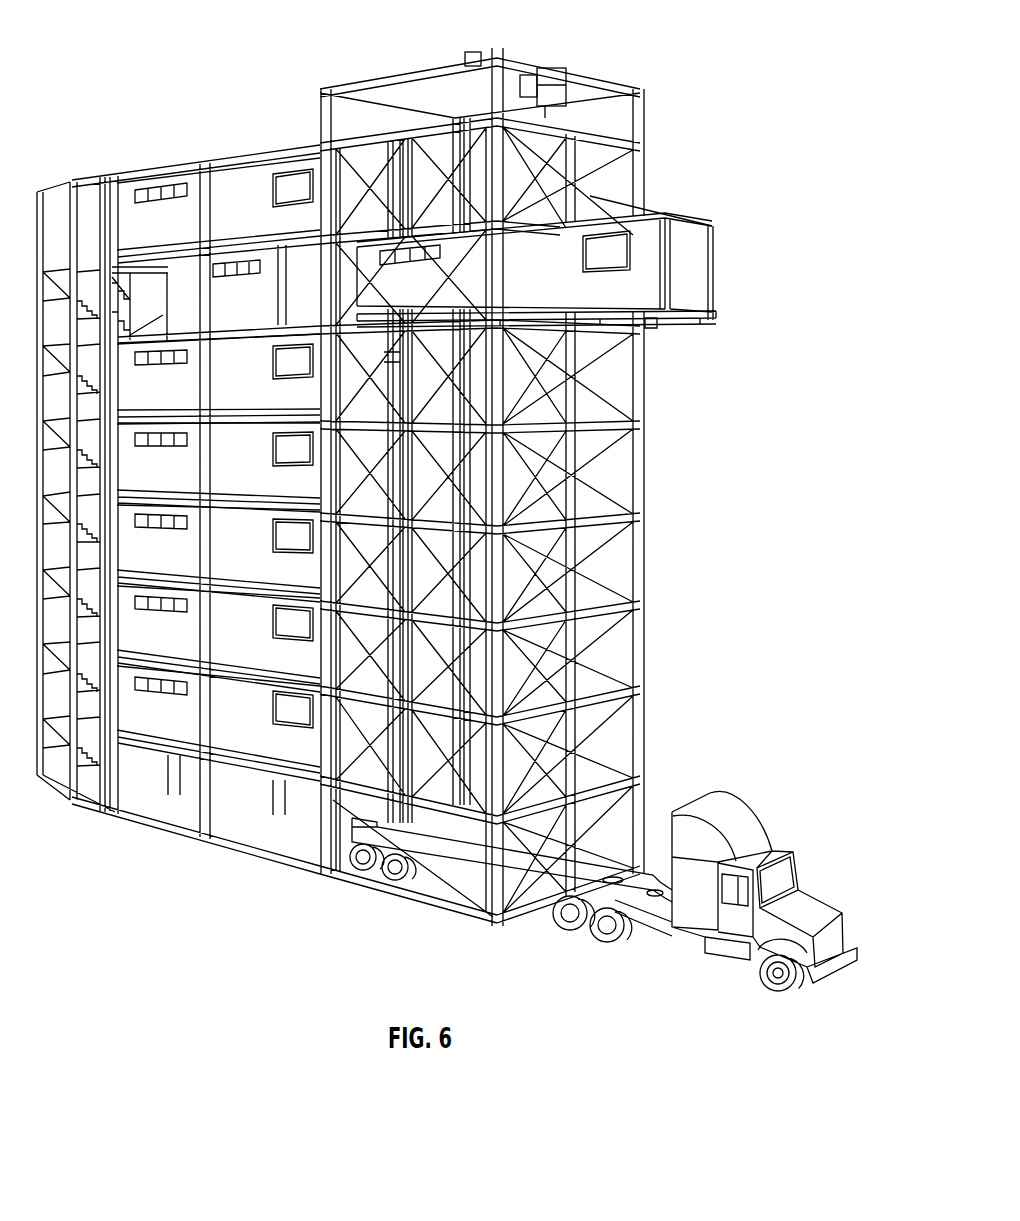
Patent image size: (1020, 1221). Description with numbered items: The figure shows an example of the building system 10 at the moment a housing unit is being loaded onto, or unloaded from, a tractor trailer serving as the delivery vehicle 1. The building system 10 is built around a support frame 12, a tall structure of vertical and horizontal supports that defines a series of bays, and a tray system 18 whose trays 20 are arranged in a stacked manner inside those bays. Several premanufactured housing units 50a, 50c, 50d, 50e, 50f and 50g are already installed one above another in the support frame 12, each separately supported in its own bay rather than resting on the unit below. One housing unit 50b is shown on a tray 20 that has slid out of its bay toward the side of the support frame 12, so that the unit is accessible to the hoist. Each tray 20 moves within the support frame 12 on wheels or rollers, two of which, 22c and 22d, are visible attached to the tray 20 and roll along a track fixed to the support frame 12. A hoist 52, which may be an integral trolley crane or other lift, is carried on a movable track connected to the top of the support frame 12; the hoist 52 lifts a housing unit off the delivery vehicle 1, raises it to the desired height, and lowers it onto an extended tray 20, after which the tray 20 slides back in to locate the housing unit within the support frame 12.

The delivery vehicle 1 is at (755, 803).
The building system 10 is at (674, 535).
The support frame 12 is at (643, 490).
The tray system 18 is at (718, 316).
The tray 20 is at (688, 312).
The wheel or roller 22c is at (652, 326).
The wheel or roller 22d is at (363, 358).
The housing unit 50a is at (177, 233).
The housing unit 50b is at (551, 298).
The housing unit 50c is at (177, 397).
The housing unit 50d is at (177, 479).
The housing unit 50e is at (177, 561).
The housing unit 50f is at (177, 643).
The housing unit 50g is at (177, 725).
The hoist 52 is at (561, 66).